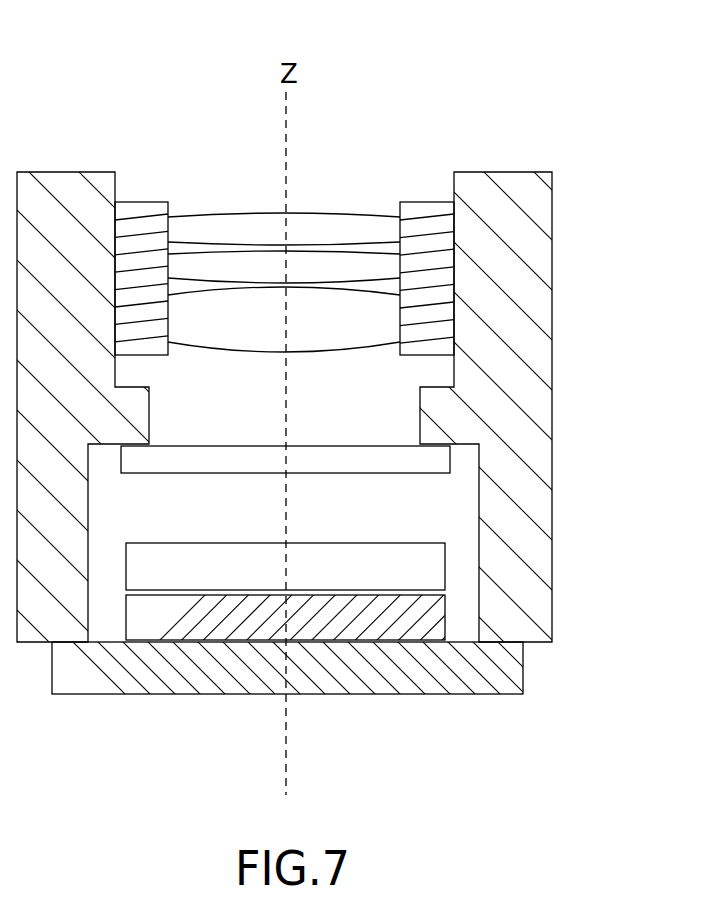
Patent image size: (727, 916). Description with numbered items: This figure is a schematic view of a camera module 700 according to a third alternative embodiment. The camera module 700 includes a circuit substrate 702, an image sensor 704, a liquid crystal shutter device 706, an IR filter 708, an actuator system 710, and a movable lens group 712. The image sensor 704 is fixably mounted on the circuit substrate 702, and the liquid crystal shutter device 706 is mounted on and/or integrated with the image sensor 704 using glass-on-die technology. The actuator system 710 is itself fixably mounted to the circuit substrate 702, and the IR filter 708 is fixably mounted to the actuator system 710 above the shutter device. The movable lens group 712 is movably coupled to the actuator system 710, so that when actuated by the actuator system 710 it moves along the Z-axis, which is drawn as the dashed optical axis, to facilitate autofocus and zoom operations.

The camera module 700 is at (72, 100).
The circuit substrate 702 is at (475, 661).
The image sensor 704 is at (178, 620).
The liquid crystal shutter device 706 is at (265, 558).
The IR filter 708 is at (305, 457).
The actuator system 710 is at (510, 272).
The movable lens group 712 is at (222, 262).